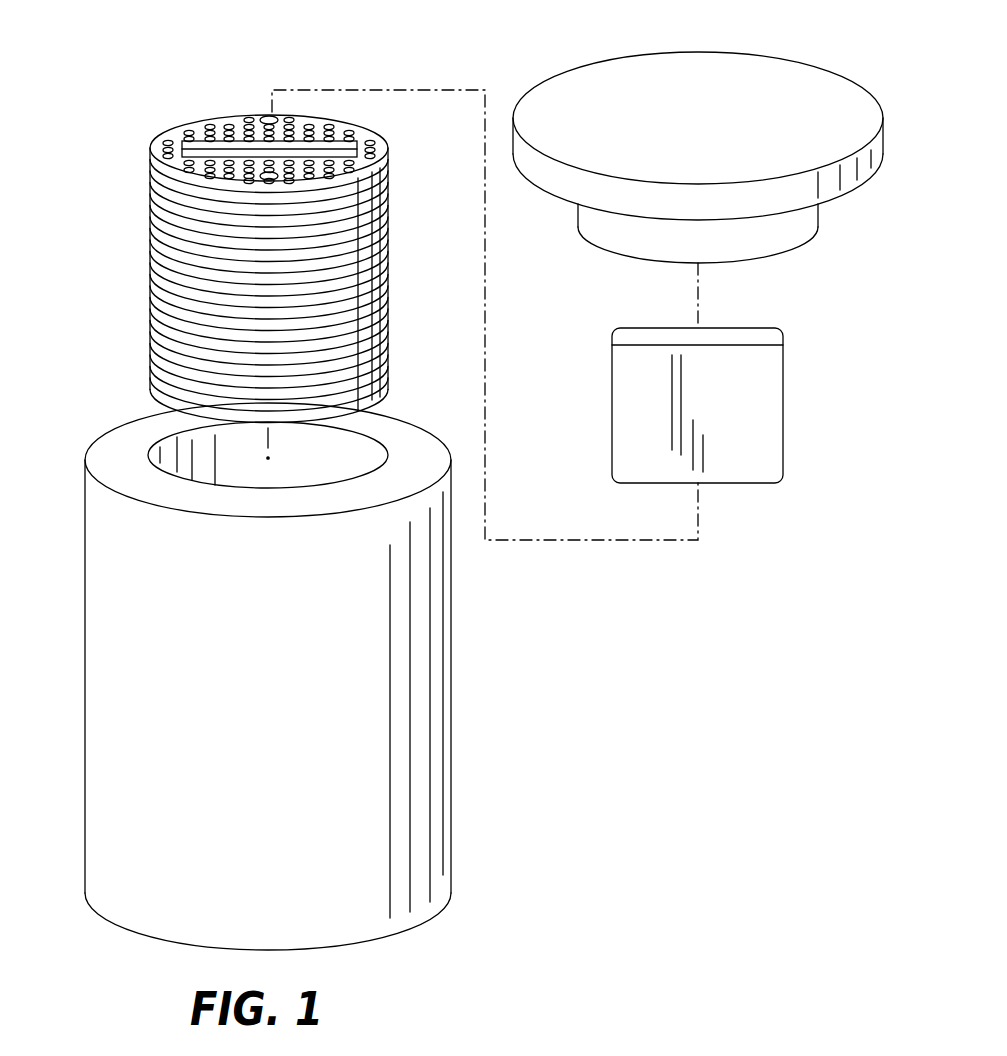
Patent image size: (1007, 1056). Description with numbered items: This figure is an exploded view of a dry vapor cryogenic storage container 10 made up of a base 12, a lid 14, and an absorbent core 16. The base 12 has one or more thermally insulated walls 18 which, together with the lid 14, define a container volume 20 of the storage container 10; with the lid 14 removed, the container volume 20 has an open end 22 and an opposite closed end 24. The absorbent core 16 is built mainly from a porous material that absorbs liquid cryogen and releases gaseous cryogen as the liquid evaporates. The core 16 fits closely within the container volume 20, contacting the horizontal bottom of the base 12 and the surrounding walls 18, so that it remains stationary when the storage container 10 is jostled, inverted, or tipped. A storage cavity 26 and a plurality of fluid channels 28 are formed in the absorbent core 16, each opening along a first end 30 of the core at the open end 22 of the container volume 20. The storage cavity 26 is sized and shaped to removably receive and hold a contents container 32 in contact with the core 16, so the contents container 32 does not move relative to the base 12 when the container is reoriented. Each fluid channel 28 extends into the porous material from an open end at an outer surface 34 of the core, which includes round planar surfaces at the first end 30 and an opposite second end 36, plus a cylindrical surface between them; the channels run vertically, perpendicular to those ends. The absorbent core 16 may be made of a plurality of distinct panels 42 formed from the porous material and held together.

The dry vapor cryogenic storage container 10 is at (146, 58).
The base 12 is at (108, 655).
The lid 14 is at (585, 68).
The absorbent core 16 is at (128, 285).
The thermally insulated walls 18 is at (102, 462).
The container volume 20 is at (176, 446).
The open end 22 is at (388, 454).
The closed end 24 is at (155, 897).
The storage cavity 26 is at (288, 157).
The fluid channels 28 is at (230, 125).
The first end 30 is at (250, 115).
The contents container 32 is at (772, 390).
The outer surface 34 is at (368, 272).
The second end 36 is at (290, 427).
The panels 42 is at (160, 212).